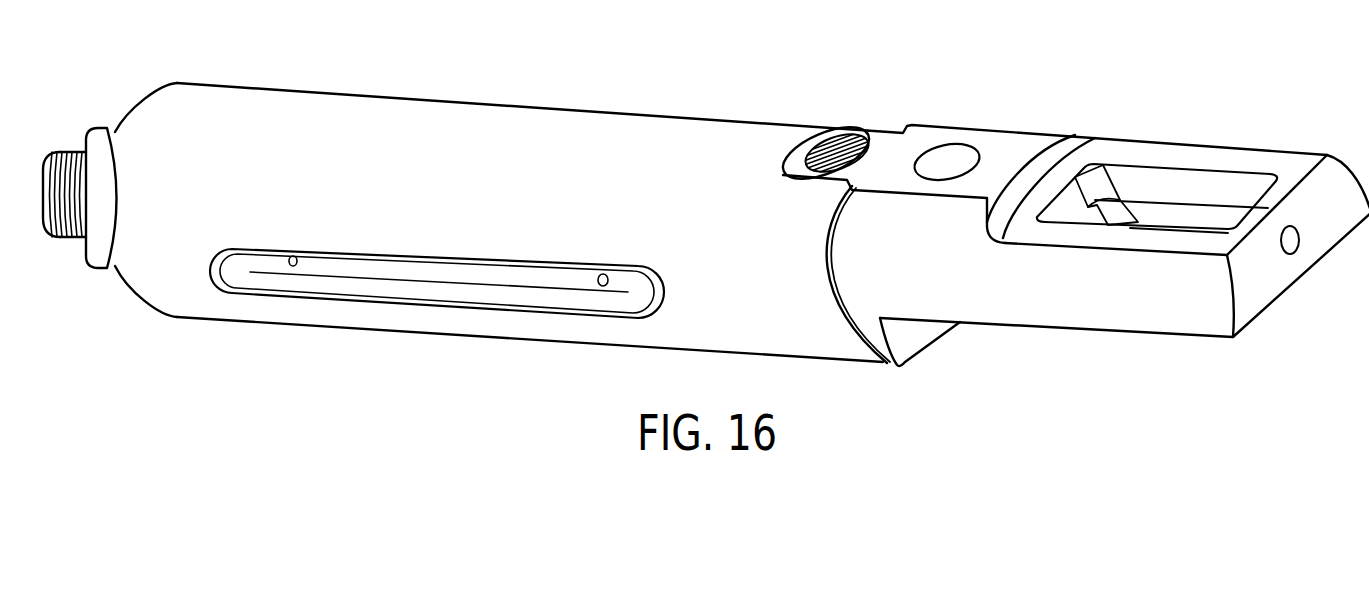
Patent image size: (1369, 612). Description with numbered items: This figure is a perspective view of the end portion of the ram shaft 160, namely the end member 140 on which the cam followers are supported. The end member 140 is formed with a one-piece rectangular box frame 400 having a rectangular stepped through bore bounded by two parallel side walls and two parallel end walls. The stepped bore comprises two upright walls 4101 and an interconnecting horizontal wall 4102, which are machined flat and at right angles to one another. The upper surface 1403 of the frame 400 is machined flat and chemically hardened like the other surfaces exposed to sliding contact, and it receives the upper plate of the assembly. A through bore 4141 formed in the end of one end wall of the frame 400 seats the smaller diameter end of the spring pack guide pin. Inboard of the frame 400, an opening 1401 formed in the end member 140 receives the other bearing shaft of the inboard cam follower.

The ram shaft 160 is at (435, 116).
The end member 140 is at (968, 307).
The opening 1401 is at (960, 152).
The rectangular frame 400 is at (1160, 340).
The upper surface 1403 is at (1160, 157).
The upright walls 4101 is at (1233, 217).
The interconnecting horizontal wall 4102 is at (1148, 198).
The through bore 4141 is at (1293, 252).